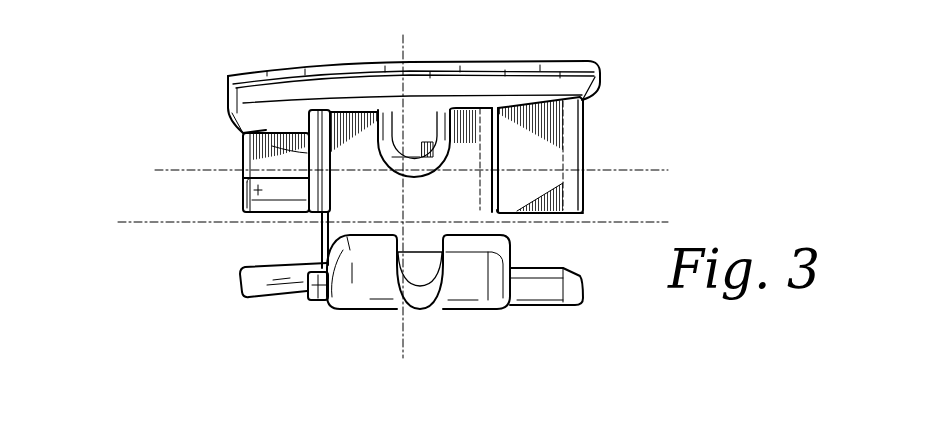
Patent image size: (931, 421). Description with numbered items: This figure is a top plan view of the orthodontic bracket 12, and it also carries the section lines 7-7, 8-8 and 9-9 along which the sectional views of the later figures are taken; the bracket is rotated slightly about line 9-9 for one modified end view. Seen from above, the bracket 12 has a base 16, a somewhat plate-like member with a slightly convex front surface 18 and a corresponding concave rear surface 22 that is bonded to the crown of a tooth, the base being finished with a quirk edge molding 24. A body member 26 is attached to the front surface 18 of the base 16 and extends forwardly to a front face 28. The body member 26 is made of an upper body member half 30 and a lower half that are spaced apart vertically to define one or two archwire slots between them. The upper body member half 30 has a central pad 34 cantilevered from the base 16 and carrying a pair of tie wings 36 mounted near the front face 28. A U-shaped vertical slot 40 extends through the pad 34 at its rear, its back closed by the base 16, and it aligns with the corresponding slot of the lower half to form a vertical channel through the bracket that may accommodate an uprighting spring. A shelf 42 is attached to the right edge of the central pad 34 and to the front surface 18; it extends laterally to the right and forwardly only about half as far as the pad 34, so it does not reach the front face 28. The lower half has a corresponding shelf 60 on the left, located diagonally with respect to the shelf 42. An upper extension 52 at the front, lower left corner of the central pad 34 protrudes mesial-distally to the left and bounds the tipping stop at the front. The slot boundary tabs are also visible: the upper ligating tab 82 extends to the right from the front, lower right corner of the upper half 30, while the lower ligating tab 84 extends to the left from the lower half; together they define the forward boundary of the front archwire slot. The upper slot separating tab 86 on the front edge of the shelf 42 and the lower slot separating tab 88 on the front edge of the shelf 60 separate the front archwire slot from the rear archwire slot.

The section line 7- 7 is at (657, 205).
The section line 8- 8 is at (636, 152).
The section line 9- 9 is at (370, 345).
The bracket 12 is at (592, 329).
The base 16 is at (212, 75).
The front surface 18 is at (272, 103).
The rear surface 22 is at (314, 72).
The quirk edge molding 24 is at (228, 99).
The body member 26 is at (596, 109).
The front face 28 is at (460, 311).
The upper body member half 30 is at (357, 205).
The central pad 34 is at (467, 150).
The tie wings 36 is at (373, 278).
The U-shaped vertical slot 40 is at (435, 132).
The shelf 42 is at (536, 130).
The upper extension 52 is at (313, 300).
The shelf 60 is at (278, 160).
The upper ligating tab 82 is at (555, 306).
The lower ligating tab 84 is at (248, 280).
The upper slot separating tab 86 is at (528, 214).
The lower slot separating tab 88 is at (243, 192).